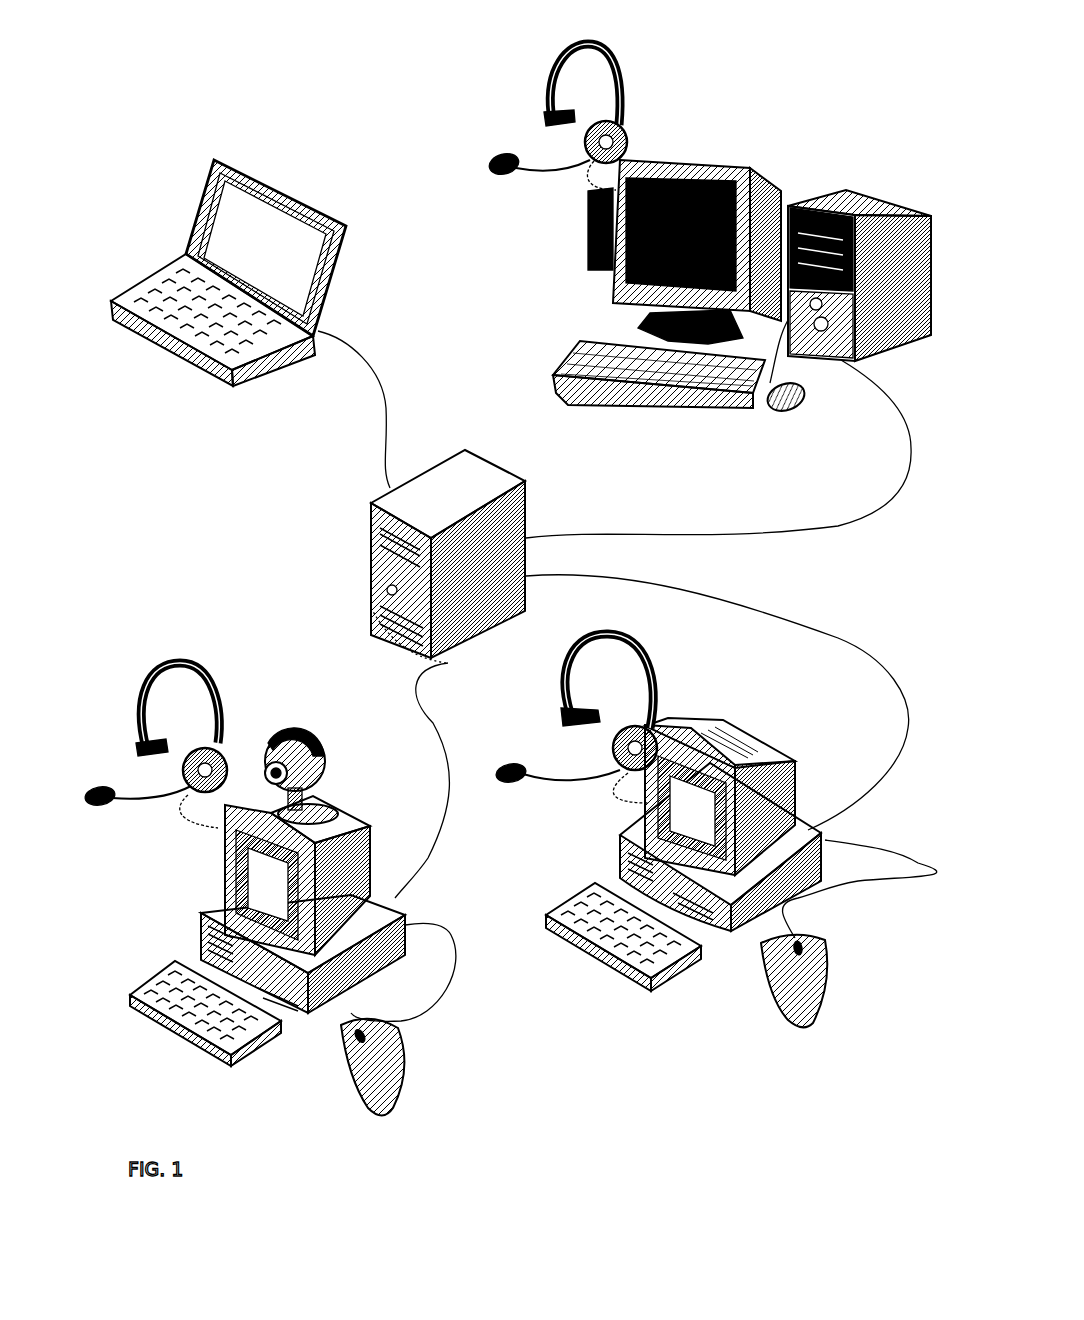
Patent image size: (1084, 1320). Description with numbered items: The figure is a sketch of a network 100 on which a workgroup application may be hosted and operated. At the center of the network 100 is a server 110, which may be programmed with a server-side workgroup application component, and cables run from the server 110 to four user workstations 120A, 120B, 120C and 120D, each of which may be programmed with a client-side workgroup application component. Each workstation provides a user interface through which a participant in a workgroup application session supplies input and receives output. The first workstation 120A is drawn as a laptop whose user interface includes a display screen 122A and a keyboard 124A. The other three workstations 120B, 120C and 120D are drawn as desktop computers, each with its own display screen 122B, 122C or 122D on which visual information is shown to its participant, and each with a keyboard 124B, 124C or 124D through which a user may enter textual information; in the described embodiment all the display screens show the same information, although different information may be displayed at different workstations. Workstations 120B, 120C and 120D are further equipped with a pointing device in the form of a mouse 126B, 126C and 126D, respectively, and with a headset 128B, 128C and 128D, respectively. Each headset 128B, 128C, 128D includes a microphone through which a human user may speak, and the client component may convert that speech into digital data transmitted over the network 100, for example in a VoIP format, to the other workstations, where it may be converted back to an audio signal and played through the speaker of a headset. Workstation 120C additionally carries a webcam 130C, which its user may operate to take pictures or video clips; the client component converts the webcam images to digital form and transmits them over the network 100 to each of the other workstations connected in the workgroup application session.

The network 100 is at (618, 1130).
The server 110 is at (517, 473).
The user workstation 120A is at (290, 147).
The user workstation 120B is at (691, 116).
The user workstation 120C is at (310, 700).
The user workstation 120D is at (729, 690).
The display screen 122A is at (217, 220).
The display screen 122B is at (580, 257).
The display screen 122C is at (240, 863).
The display screen 122D is at (650, 807).
The keyboard 124A is at (165, 327).
The keyboard 124B is at (545, 367).
The keyboard 124C is at (122, 997).
The keyboard 124D is at (542, 923).
The mouse 126B is at (786, 382).
The mouse 126C is at (393, 1090).
The mouse 126D is at (767, 990).
The headset 128B is at (593, 53).
The headset 128C is at (143, 653).
The headset 128D is at (603, 633).
The webcam 130C is at (337, 763).